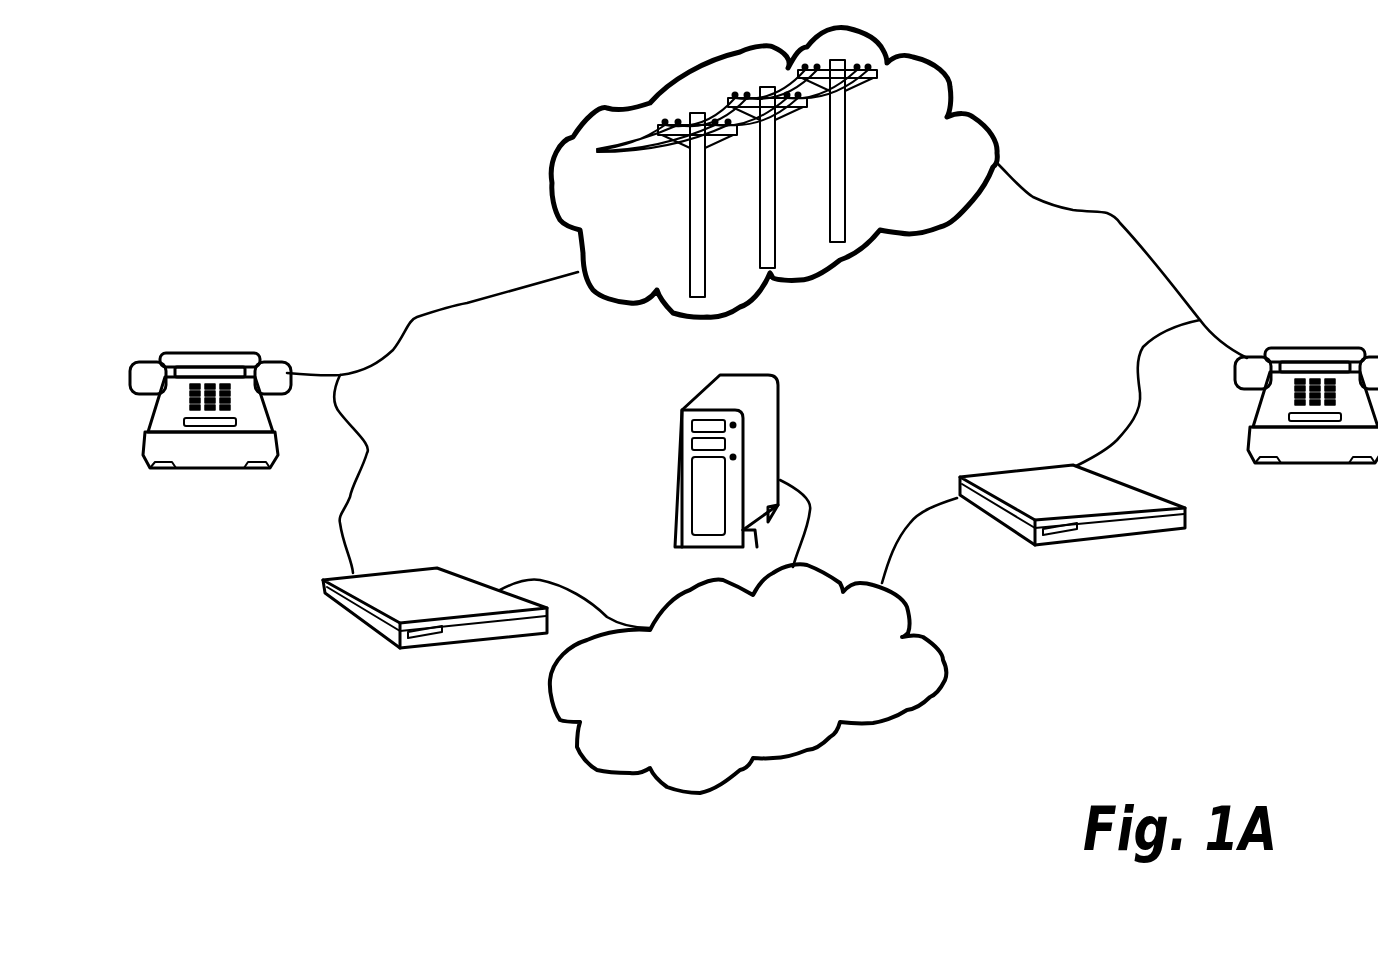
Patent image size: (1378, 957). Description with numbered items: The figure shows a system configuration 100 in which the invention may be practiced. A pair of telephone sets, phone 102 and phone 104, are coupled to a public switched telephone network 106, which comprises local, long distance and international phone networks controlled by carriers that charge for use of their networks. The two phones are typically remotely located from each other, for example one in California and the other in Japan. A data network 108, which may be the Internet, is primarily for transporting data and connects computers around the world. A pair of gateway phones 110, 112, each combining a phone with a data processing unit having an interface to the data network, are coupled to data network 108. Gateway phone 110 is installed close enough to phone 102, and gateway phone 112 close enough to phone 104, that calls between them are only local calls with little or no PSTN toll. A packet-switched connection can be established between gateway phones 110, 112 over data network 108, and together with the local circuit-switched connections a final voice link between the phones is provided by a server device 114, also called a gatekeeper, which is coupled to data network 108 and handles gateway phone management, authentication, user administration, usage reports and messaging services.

The system configuration 100 is at (754, 410).
The telephone set 102 is at (223, 347).
The telephone set 104 is at (1290, 343).
The public switched telephone network 106 is at (940, 63).
The data network 108 is at (908, 697).
The gateway phone 110 is at (382, 625).
The gateway phone 112 is at (1027, 535).
The server device 114 is at (762, 403).